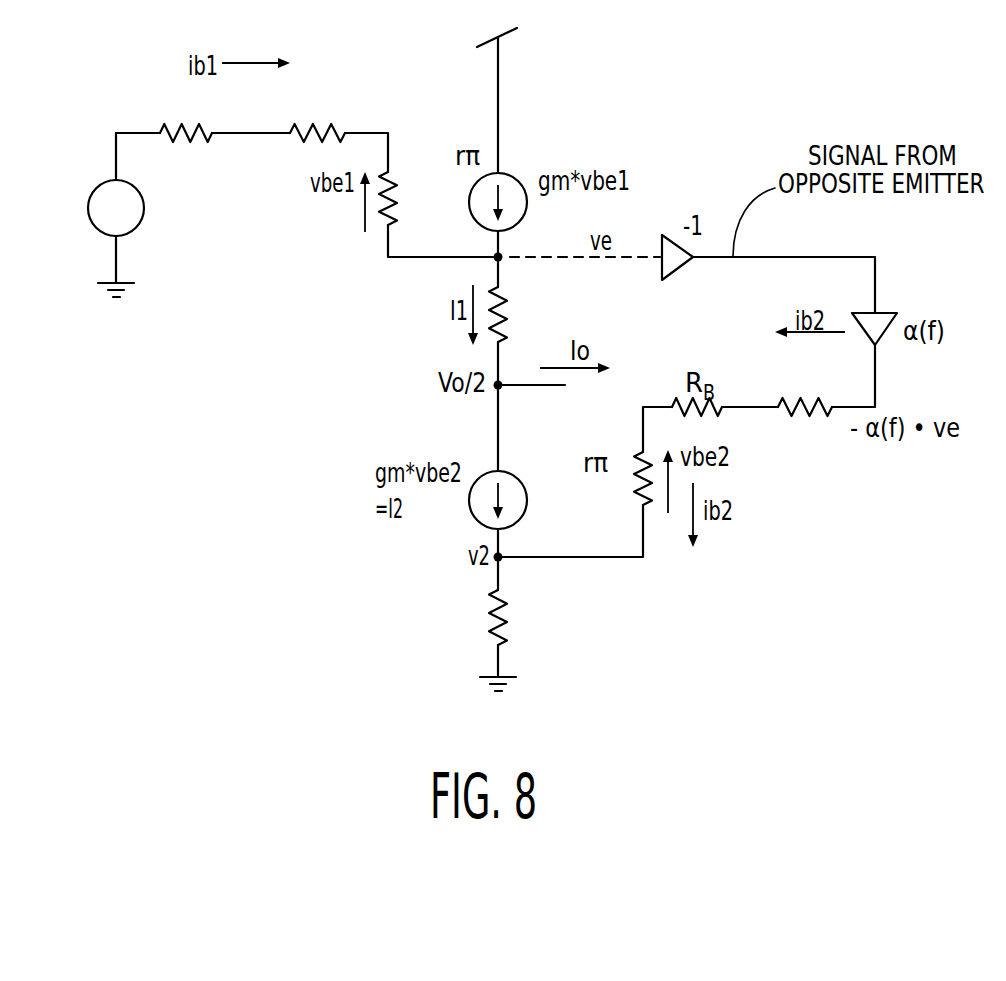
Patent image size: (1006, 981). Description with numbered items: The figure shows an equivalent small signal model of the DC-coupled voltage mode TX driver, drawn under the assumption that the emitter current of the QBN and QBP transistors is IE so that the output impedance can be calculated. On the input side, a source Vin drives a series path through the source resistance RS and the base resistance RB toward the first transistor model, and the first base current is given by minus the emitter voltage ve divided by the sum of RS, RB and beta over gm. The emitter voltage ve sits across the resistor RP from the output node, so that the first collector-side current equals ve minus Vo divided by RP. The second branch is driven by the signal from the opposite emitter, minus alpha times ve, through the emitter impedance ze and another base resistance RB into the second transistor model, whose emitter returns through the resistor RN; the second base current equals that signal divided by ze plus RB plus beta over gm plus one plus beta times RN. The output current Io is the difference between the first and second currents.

The input voltage source Vin/2 Vin is at (146, 208).
The source resistance RS is at (186, 114).
The base resistance RB is at (317, 114).
The resistor RP is at (518, 315).
The resistor RN is at (518, 617).
The emitter impedance ze is at (805, 391).